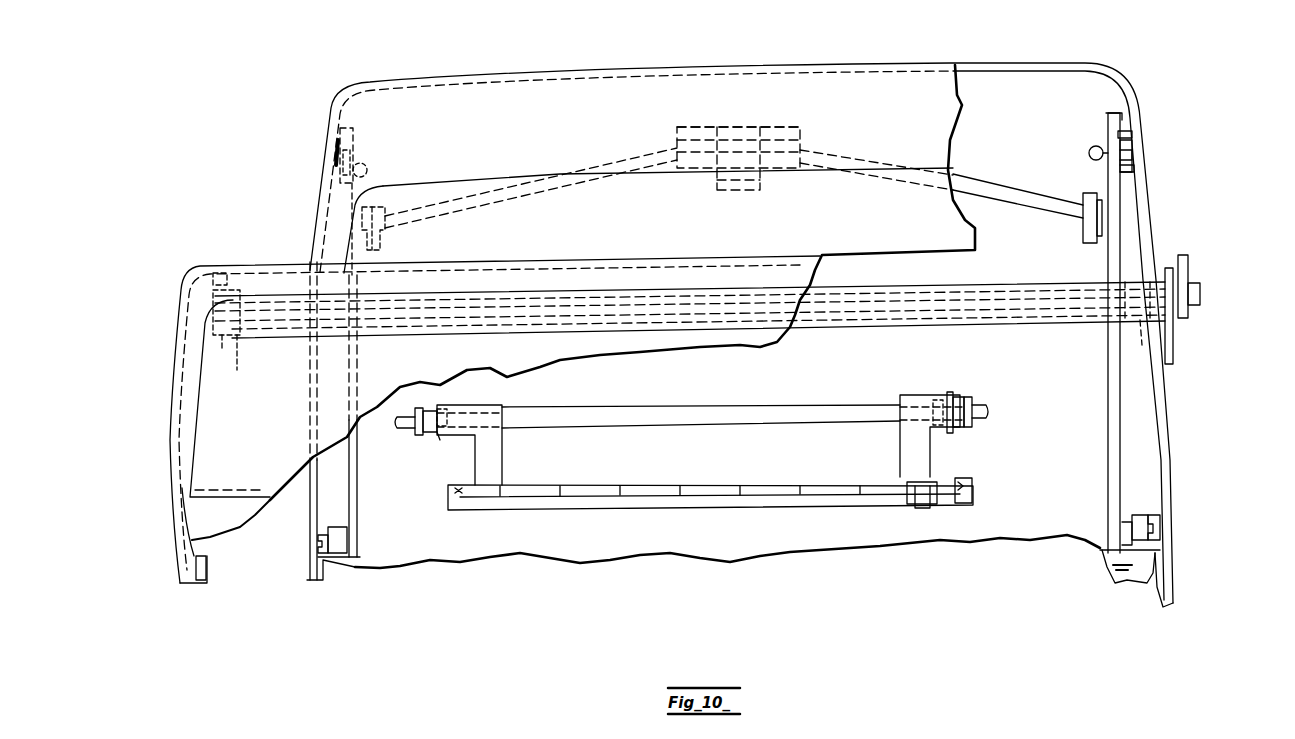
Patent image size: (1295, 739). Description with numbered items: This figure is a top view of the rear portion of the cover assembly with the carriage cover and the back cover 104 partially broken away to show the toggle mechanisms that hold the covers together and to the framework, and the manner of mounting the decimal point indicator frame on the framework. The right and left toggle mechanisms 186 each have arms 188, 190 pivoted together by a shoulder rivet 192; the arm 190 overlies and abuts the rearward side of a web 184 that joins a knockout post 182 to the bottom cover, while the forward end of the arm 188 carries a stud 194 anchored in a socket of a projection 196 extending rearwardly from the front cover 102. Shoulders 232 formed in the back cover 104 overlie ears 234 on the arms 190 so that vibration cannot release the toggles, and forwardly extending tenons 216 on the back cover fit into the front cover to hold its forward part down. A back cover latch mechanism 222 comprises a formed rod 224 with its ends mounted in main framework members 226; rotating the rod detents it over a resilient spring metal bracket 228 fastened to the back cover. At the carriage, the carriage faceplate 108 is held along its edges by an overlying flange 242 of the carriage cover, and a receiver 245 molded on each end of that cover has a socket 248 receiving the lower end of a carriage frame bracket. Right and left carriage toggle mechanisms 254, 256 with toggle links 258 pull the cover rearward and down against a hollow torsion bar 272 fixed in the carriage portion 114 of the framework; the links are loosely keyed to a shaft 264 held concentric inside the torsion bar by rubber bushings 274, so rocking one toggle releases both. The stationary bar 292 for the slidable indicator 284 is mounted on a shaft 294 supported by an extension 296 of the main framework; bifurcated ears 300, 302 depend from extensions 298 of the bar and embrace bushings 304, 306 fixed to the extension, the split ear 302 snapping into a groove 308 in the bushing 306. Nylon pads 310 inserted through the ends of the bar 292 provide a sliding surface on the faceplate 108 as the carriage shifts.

The front cover 102 is at (1175, 605).
The back cover 104 is at (963, 112).
The carriage faceplate 108 is at (235, 527).
The carriage portion 114 is at (1173, 350).
The knockout post 182 is at (1089, 153).
The web 184 is at (1135, 157).
The toggle mechanism 186 is at (1122, 78).
The toggle arm 188 is at (357, 490).
The toggle arm 190 is at (1136, 175).
The shoulder rivet 192 is at (1105, 116).
The stud 194 is at (1162, 520).
The projection 196 is at (1143, 515).
The tenon 216 is at (1175, 558).
The back cover latch mechanism 222 is at (772, 130).
The formed rod 224 is at (981, 190).
The main framework member 226 is at (1085, 232).
The spring metal bracket 228 is at (677, 132).
The shoulder 232 is at (332, 140).
The ear 234 is at (1128, 133).
The flange 242 is at (200, 527).
The receiver 245 is at (201, 587).
The socket 248 is at (207, 560).
The carriage toggle mechanism 254 is at (1205, 280).
The carriage toggle mechanism 256 is at (185, 278).
The toggle link 258 is at (1187, 262).
The shaft 264 is at (840, 322).
The hollow torsion bar 272 is at (1027, 322).
The rubber bushing 274 is at (1141, 324).
The slidable indicator 284 is at (907, 505).
The bar 292 is at (690, 505).
The shaft 294 is at (700, 405).
The extension 296 is at (410, 430).
The extension 298 is at (470, 455).
The bifurcated ear 300 is at (430, 440).
The bifurcated ear 302 is at (950, 393).
The bushing 304 is at (432, 407).
The bushing 306 is at (967, 396).
The groove 308 is at (946, 393).
The nylon pad 310 is at (958, 504).